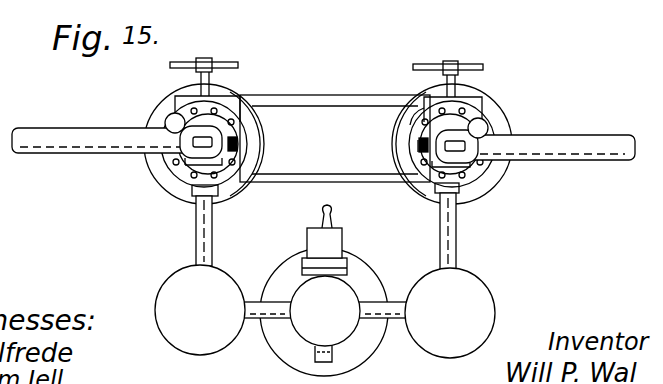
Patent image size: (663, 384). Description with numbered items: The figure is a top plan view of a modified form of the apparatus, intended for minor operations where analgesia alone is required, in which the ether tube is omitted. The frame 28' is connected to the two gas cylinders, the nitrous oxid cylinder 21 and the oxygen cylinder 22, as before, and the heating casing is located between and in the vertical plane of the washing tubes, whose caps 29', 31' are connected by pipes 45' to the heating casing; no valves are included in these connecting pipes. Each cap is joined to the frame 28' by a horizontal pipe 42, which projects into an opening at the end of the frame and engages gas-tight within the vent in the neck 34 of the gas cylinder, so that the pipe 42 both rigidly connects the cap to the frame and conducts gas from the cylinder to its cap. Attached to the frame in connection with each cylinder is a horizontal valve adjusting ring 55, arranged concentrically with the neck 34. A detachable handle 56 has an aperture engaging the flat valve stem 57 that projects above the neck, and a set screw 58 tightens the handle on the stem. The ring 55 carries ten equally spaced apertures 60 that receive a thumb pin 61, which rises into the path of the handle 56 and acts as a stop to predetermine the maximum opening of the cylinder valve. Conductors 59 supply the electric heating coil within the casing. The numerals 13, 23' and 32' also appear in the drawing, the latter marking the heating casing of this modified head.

The valve handle 13 is at (205, 60).
The nitrous oxid cylinder 21 is at (163, 100).
The oxygen cylinder 22 is at (482, 190).
The casing ring 23' is at (310, 312).
The frame 28' is at (335, 124).
The cap 29' is at (200, 310).
The cap 31' is at (450, 313).
The central valve chamber 32' is at (325, 295).
The neck 34 is at (215, 126).
The horizontal pipe 42 is at (200, 213).
The pipe 45' is at (329, 279).
The valve adjusting ring 55 is at (424, 108).
The detachable handle 56 is at (48, 131).
The flat valve stem 57 is at (197, 144).
The set screw 58 is at (418, 147).
The conductors 59 is at (333, 212).
The apertures 60 is at (232, 120).
The thumb pin 61 is at (166, 120).